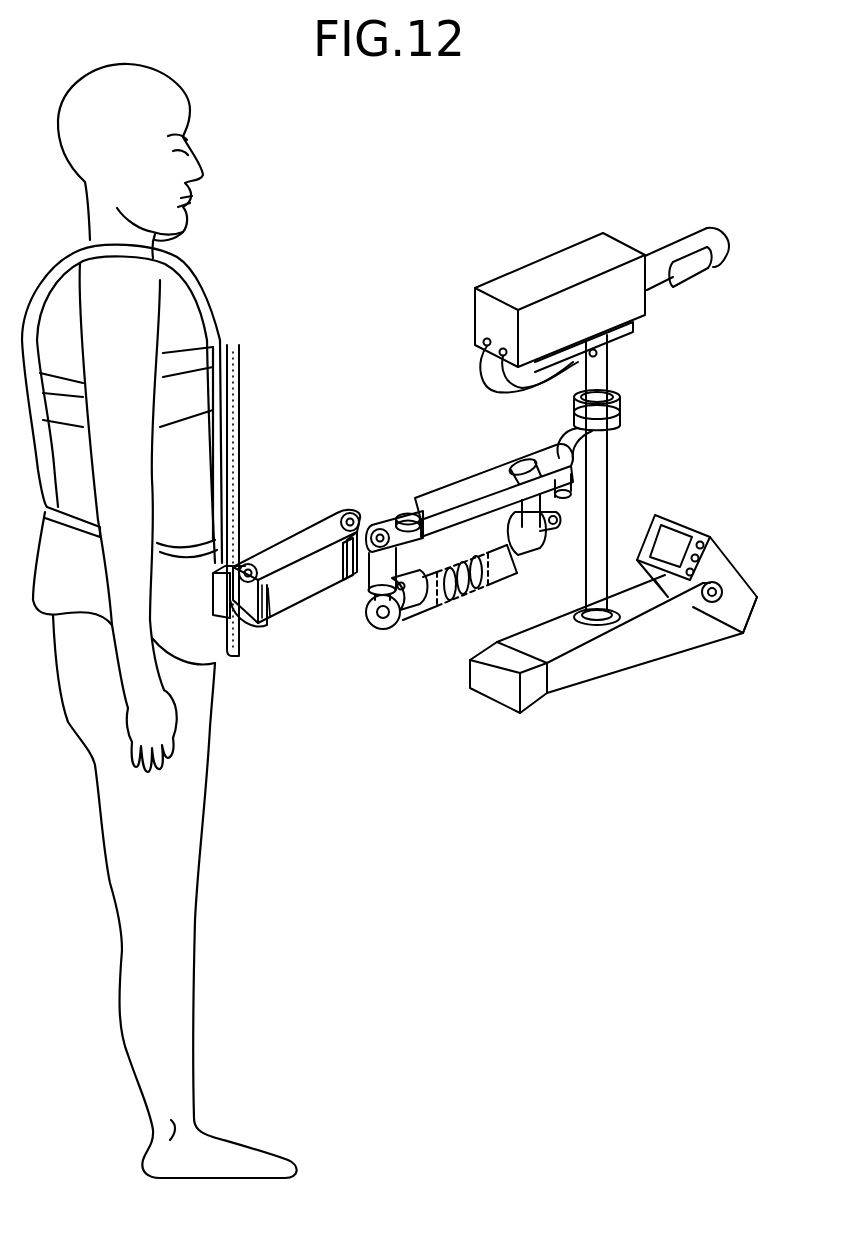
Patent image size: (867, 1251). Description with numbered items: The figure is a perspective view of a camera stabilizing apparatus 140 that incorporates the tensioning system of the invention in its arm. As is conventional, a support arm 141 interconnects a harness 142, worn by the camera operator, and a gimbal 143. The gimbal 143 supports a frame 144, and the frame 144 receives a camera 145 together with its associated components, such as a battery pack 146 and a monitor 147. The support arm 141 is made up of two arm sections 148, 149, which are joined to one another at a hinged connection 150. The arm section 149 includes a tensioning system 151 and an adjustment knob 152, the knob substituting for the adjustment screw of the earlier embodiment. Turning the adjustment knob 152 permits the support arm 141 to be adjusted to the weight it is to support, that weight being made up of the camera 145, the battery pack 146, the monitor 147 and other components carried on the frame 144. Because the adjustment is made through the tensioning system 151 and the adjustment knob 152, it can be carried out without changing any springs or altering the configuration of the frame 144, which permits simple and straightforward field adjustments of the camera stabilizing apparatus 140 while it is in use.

The camera stabilizing apparatus 140 is at (309, 460).
The support arm 141 is at (322, 616).
The harness 142 is at (221, 342).
The gimbal 143 is at (612, 412).
The frame 144 is at (608, 478).
The camera 145 is at (545, 272).
The battery pack 146 is at (530, 695).
The monitor 147 is at (740, 597).
The arm section 148 is at (283, 558).
The arm section 149 is at (464, 500).
The hinged connection 150 is at (367, 597).
The tensioning system 151 is at (457, 608).
The adjustment knob 152 is at (403, 516).